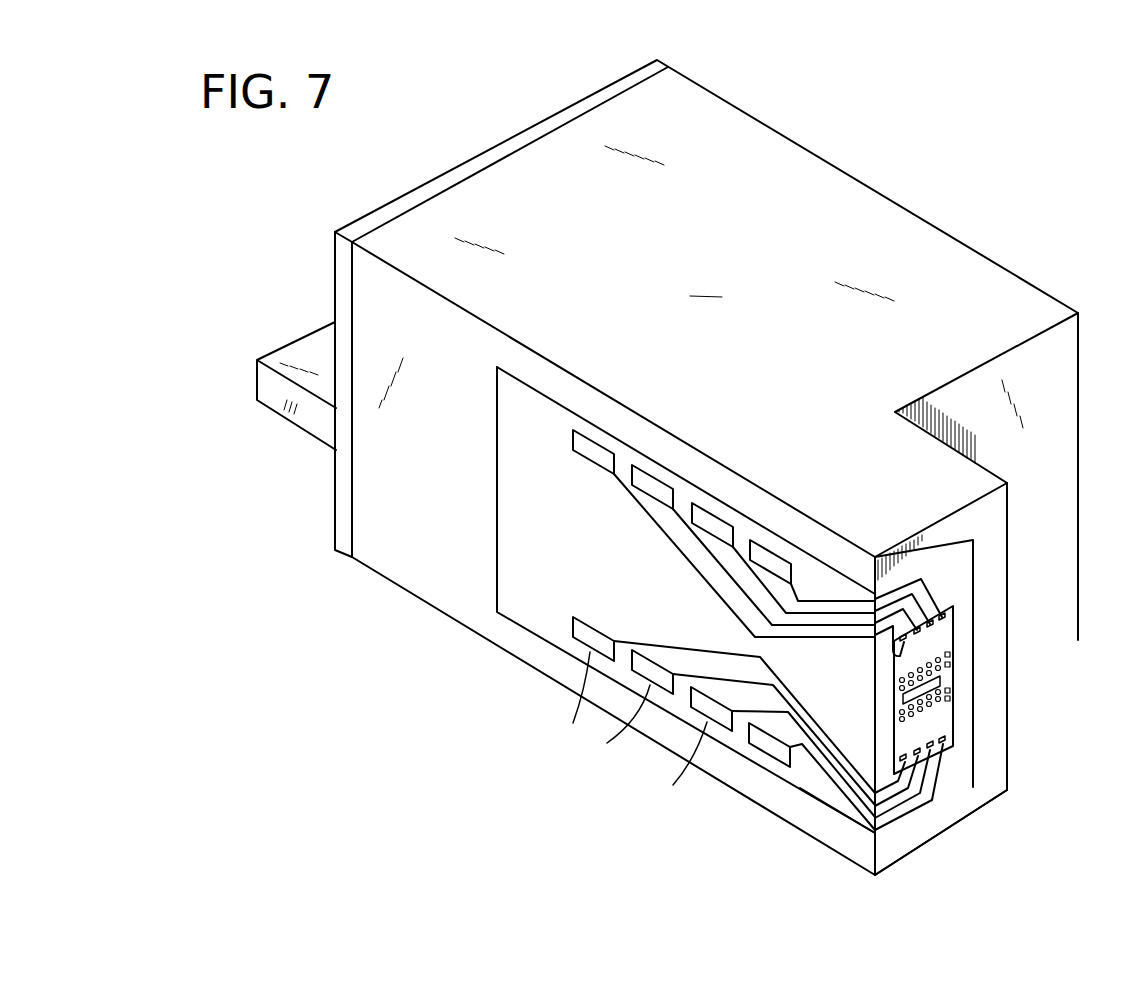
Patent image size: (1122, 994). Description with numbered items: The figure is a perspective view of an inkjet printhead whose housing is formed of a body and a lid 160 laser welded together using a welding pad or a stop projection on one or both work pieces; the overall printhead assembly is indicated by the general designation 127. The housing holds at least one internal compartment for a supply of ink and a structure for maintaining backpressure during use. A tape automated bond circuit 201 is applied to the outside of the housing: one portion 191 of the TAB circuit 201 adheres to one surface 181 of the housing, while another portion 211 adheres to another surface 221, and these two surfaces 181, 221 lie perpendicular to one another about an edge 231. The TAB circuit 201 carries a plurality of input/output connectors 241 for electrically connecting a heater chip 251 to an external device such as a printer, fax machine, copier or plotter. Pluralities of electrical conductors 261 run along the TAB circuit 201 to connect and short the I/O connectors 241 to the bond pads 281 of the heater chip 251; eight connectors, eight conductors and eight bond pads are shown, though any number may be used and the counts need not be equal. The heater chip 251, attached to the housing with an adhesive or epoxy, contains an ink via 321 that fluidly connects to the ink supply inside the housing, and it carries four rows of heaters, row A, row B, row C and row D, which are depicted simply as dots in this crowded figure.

The print cartridge body 127 is at (993, 138).
The lid 160 is at (298, 353).
The surface 181 is at (448, 452).
The portion of TAB circuit 191 is at (513, 372).
The tape automated bond (TAB) circuit 201 is at (497, 512).
The input/output (I/O) connectors 241 is at (645, 477).
The electrical conductors 261 is at (667, 652).
The portion of TAB circuit 211 is at (973, 548).
The heater chip 251 is at (950, 603).
The bond pads 281 is at (945, 617).
The ink via 321 is at (950, 689).
The row A of heaters A is at (950, 665).
The row B of heaters B is at (950, 656).
The row C of heaters C is at (950, 693).
The row D of heaters D is at (950, 699).
The edge 231 is at (873, 848).
The surface 221 is at (902, 838).